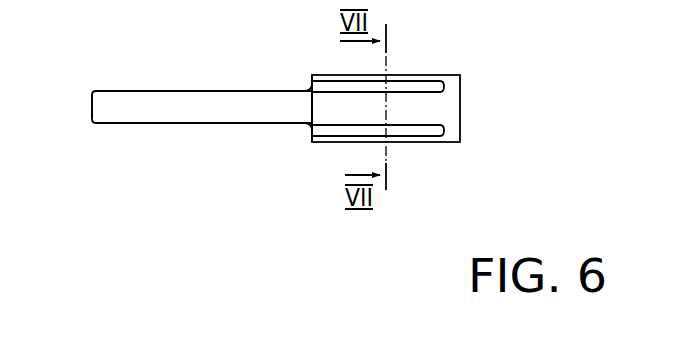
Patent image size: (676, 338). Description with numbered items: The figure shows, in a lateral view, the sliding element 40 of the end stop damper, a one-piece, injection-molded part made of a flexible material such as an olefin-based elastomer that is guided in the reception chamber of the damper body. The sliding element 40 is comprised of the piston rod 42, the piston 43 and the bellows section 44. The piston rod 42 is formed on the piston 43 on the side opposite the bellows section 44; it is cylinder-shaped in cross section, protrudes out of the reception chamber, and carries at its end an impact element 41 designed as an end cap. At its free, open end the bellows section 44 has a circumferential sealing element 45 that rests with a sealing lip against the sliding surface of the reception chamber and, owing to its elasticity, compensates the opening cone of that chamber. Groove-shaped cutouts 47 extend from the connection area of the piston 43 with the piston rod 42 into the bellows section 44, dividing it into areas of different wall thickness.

The sliding element 40 is at (137, 135).
The impact element 41 is at (96, 103).
The piston rod 42 is at (210, 105).
The piston 43 is at (312, 116).
The bellows section 44 is at (417, 103).
The sealing element 45 is at (460, 73).
The groove-shaped cutouts 47 is at (428, 132).